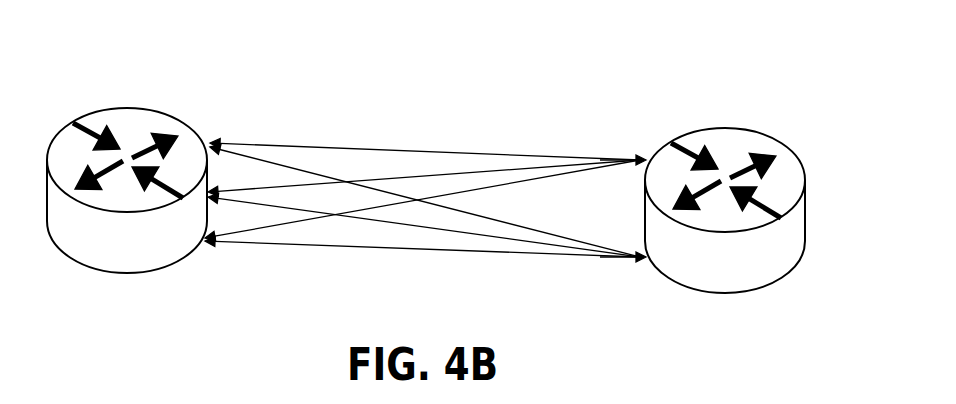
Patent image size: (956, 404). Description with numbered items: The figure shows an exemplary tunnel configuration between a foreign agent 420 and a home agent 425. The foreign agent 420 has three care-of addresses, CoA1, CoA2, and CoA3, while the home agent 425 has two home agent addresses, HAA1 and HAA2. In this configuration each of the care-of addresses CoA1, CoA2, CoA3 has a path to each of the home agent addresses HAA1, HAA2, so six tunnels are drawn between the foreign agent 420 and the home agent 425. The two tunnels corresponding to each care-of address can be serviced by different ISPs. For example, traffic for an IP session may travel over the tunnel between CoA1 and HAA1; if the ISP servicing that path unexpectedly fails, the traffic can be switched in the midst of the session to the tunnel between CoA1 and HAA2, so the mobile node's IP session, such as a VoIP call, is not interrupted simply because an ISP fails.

The foreign agent 420 is at (165, 110).
The home agent 425 is at (763, 130).
The first care-of address CoA1 is at (425, 192).
The second care-of address CoA2 is at (424, 208).
The third care-of address CoA3 is at (422, 212).
The first home agent address HAA1 is at (610, 162).
The second home agent address HAA2 is at (610, 261).